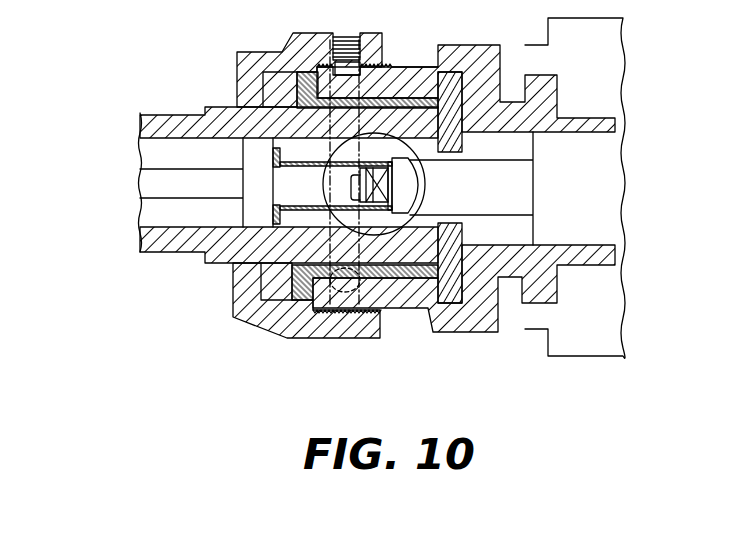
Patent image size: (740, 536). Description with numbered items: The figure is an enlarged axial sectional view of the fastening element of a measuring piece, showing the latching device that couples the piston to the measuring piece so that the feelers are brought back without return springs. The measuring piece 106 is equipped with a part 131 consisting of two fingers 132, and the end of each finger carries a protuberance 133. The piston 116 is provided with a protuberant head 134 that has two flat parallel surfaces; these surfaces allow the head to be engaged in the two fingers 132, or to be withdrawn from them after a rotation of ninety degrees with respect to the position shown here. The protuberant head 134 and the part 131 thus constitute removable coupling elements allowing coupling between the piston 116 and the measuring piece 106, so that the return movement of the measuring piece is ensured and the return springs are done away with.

The measuring piece 106 is at (158, 207).
The piston 116 is at (520, 202).
The part 131 is at (258, 298).
The fingers 132 is at (303, 162).
The protuberance 133 is at (428, 182).
The protuberant head 134 is at (368, 194).